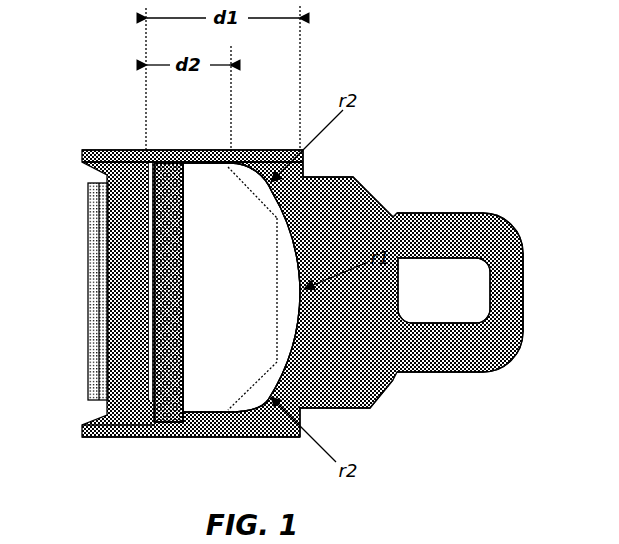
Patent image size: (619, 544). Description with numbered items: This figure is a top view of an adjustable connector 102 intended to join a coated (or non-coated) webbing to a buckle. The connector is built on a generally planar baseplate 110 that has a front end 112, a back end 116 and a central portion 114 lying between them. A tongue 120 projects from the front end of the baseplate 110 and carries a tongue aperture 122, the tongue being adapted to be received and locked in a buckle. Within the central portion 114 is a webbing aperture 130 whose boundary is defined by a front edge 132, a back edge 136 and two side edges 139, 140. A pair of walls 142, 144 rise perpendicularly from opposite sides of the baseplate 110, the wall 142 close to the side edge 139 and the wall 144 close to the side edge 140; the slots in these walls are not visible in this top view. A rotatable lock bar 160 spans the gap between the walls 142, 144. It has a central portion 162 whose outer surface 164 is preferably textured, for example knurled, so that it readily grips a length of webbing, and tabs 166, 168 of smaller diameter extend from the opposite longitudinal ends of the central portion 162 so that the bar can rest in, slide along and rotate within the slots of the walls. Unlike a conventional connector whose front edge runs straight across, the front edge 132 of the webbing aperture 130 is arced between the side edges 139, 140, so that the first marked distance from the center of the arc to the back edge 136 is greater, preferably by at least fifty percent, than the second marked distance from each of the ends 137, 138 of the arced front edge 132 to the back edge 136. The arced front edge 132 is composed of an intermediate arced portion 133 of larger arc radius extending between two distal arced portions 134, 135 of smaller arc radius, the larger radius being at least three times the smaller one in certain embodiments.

The adjustable connector 102 is at (113, 118).
The baseplate 110 is at (354, 176).
The front end 112 is at (524, 290).
The central portion 114 is at (315, 362).
The back end 116 is at (88, 274).
The tongue 120 is at (484, 240).
The tongue aperture 122 is at (428, 299).
The webbing aperture 130 is at (221, 277).
The front edge 132 is at (303, 300).
The intermediate arced portion 133 is at (276, 292).
The distal arced portion 134 is at (252, 381).
The distal arced portion 135 is at (251, 198).
The back edge 136 is at (149, 265).
The end of arced front edge 137 is at (231, 170).
The end of arced front edge 138 is at (230, 413).
The side edge 139 is at (193, 166).
The side edge 140 is at (193, 411).
The wall 142 is at (222, 152).
The wall 144 is at (192, 437).
The rotatable lock bar 160 is at (155, 352).
The central portion 162 is at (165, 385).
The outer surface 164 is at (163, 341).
The tab 166 is at (171, 150).
The tab 168 is at (168, 424).